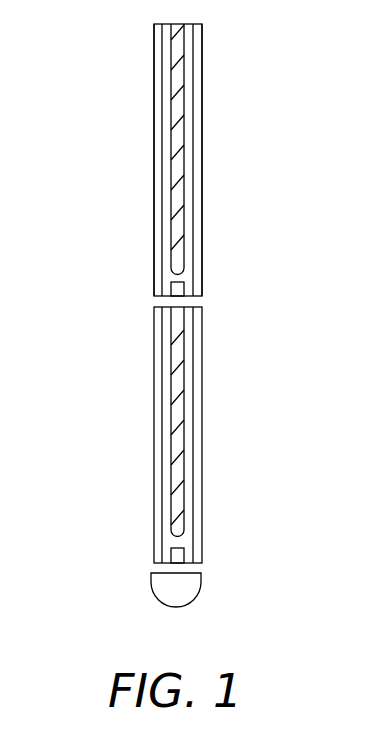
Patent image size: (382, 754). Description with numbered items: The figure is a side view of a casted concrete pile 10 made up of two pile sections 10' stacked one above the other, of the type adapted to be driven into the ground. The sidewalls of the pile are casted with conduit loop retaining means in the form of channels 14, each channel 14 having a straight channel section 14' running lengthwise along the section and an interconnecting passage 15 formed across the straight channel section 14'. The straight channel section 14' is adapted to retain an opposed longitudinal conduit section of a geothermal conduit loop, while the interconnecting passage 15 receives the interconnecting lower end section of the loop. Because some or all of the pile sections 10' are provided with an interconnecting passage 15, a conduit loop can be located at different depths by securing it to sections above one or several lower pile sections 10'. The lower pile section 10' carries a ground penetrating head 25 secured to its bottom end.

The pile 10 is at (124, 160).
The pile sections 10' is at (113, 293).
The straight channel section 14' is at (172, 280).
The channel 14 is at (239, 160).
The interconnecting passage 15 is at (181, 280).
The ground penetrating head 25 is at (183, 589).